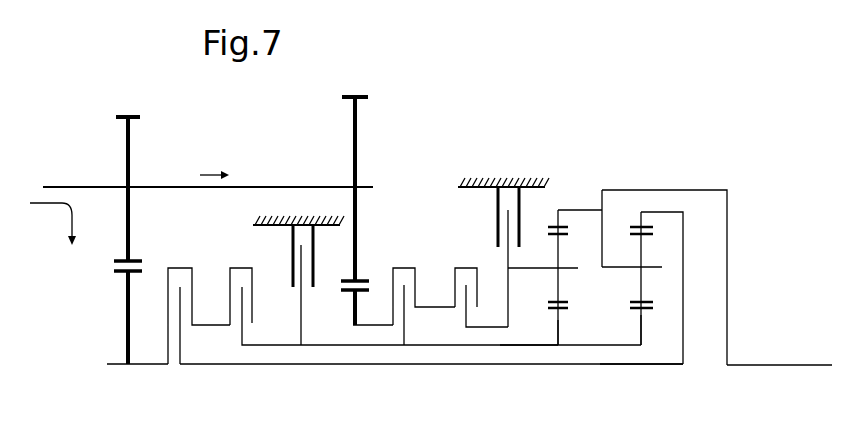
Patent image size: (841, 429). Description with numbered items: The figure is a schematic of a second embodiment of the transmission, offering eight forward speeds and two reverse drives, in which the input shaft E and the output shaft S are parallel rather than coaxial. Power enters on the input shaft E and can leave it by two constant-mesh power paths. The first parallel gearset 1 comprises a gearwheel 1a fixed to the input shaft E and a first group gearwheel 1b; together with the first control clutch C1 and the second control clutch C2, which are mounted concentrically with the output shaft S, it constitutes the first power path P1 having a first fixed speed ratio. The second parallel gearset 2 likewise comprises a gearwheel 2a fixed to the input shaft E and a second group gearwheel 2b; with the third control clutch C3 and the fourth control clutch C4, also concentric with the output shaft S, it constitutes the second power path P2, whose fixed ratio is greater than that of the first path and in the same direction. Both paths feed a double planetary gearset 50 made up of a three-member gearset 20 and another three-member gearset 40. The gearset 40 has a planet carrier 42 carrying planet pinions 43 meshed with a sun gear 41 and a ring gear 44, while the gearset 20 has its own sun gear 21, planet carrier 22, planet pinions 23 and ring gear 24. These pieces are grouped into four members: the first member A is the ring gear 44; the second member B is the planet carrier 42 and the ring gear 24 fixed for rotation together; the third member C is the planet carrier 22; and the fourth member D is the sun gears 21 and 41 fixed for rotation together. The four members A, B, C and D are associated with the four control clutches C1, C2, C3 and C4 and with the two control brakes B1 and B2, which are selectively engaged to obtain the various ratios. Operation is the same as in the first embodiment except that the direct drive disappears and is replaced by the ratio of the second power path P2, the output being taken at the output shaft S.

The first parallel gearset 1 is at (134, 240).
The gearwheel 1a is at (126, 222).
The first group gearwheel 1b is at (126, 302).
The second parallel gearset 2 is at (353, 254).
The gearwheel 2a is at (347, 258).
The second group gearwheel 2b is at (353, 316).
The three-member gearset 20 is at (534, 270).
The sun gear 21 is at (558, 335).
The planet carrier 22 is at (537, 268).
The planet pinions 23 is at (558, 282).
The ring gear 24 is at (548, 212).
The three-member gearset 40 is at (687, 243).
The sun gear 41 is at (642, 330).
The planet carrier 42 is at (662, 262).
The planet pinions 43 is at (642, 281).
The ring gear 44 is at (640, 220).
The double planetary gearset 50 is at (652, 108).
The input shaft E is at (58, 186).
The first power path P1 is at (53, 224).
The second power path P2 is at (214, 162).
The first control clutch C1 is at (198, 301).
The second control clutch C2 is at (435, 291).
The third control clutch C3 is at (477, 284).
The fourth control clutch C4 is at (423, 293).
The first control brake B1 is at (503, 212).
The second control brake B2 is at (298, 280).
The third member C is at (517, 270).
The fourth member D is at (522, 345).
The first member A is at (663, 366).
The second member B is at (728, 188).
The output shaft S is at (773, 365).